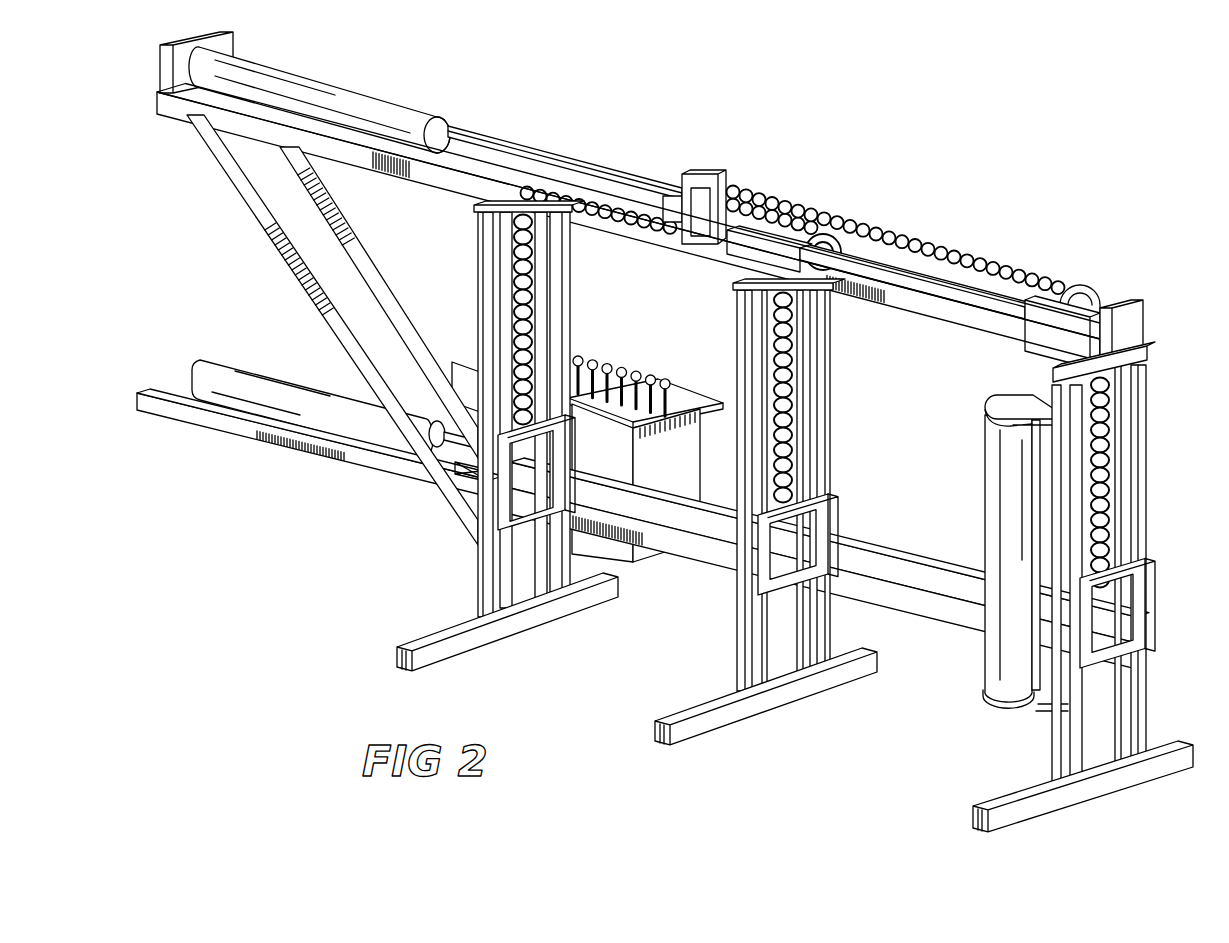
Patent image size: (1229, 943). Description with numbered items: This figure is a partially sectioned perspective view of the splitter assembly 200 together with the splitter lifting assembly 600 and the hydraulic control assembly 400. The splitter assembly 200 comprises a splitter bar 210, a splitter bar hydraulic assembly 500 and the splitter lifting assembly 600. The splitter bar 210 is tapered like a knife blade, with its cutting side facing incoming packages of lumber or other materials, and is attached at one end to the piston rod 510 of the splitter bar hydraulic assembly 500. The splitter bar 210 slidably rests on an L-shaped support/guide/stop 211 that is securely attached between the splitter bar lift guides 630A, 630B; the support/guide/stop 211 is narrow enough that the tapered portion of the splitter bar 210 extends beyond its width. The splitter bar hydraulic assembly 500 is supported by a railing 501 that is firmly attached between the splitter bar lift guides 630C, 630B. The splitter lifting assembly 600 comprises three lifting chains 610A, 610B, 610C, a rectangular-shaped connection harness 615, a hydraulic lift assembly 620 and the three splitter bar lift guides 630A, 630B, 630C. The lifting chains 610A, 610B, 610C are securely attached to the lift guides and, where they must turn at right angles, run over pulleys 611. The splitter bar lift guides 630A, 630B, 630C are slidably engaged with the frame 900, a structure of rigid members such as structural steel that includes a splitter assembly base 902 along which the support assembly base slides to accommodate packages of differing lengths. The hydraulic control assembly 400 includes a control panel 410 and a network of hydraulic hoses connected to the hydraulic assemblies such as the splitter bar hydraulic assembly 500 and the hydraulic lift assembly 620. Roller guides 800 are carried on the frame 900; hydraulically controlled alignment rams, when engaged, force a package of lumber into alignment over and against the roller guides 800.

The splitter assembly 200 is at (617, 120).
The splitter bar 210 is at (710, 523).
The support/guide/stop 211 is at (900, 585).
The hydraulic control assembly 400 is at (689, 478).
The control panel 410 is at (620, 365).
The splitter bar hydraulic assembly 500 is at (290, 397).
The railing 501 is at (227, 425).
The piston rod 510 is at (448, 415).
The splitter lifting assembly 600 is at (815, 192).
The lifting chain 610A is at (897, 243).
The lifting chain 610B is at (800, 378).
The lifting chain 610C is at (560, 307).
The pulley 611 is at (1090, 286).
The connection harness 615 is at (710, 175).
The hydraulic lift assembly 620 is at (325, 98).
The splitter bar lift guide 630A is at (1140, 598).
The splitter bar lift guide 630B is at (823, 513).
The splitter bar lift guide 630C is at (562, 460).
The roller guide 800 is at (1003, 512).
The frame 900 is at (447, 178).
The splitter assembly base 902 is at (437, 637).